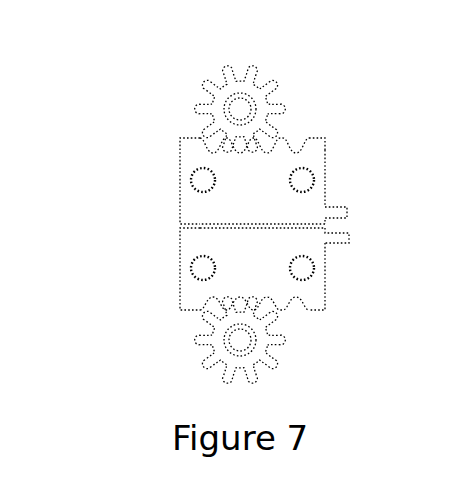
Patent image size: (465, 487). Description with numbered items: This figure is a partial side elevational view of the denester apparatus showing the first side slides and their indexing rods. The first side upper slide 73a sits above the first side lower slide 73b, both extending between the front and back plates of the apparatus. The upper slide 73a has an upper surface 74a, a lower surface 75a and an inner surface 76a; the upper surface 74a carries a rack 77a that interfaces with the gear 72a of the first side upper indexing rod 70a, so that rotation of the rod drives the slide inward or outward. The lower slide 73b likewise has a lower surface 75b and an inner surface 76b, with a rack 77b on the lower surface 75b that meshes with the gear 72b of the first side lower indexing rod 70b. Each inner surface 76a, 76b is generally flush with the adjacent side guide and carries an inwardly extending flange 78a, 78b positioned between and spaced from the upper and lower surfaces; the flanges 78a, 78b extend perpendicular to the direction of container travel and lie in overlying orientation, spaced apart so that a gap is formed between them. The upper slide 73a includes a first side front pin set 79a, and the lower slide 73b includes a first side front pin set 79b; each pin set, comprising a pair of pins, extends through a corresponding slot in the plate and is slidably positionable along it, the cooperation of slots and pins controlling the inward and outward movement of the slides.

The first side upper indexing rod 70a is at (220, 109).
The first side lower indexing rod 70b is at (226, 350).
The gear 72a is at (202, 83).
The gear 72b is at (197, 337).
The first side upper slide 73a is at (120, 186).
The first side lower slide 73b is at (118, 270).
The upper surface 74a is at (318, 138).
The lower surface 75a is at (192, 222).
The lower surface 75b is at (200, 230).
The inner surface 76a is at (327, 167).
The inner surface 76b is at (327, 285).
The rack 77a is at (284, 138).
The rack 77b is at (288, 315).
The inwardly extending flange 78a is at (347, 212).
The inwardly extending flange 78b is at (350, 238).
The first side front pin set 79a is at (190, 170).
The first side front pin set 79b is at (190, 284).